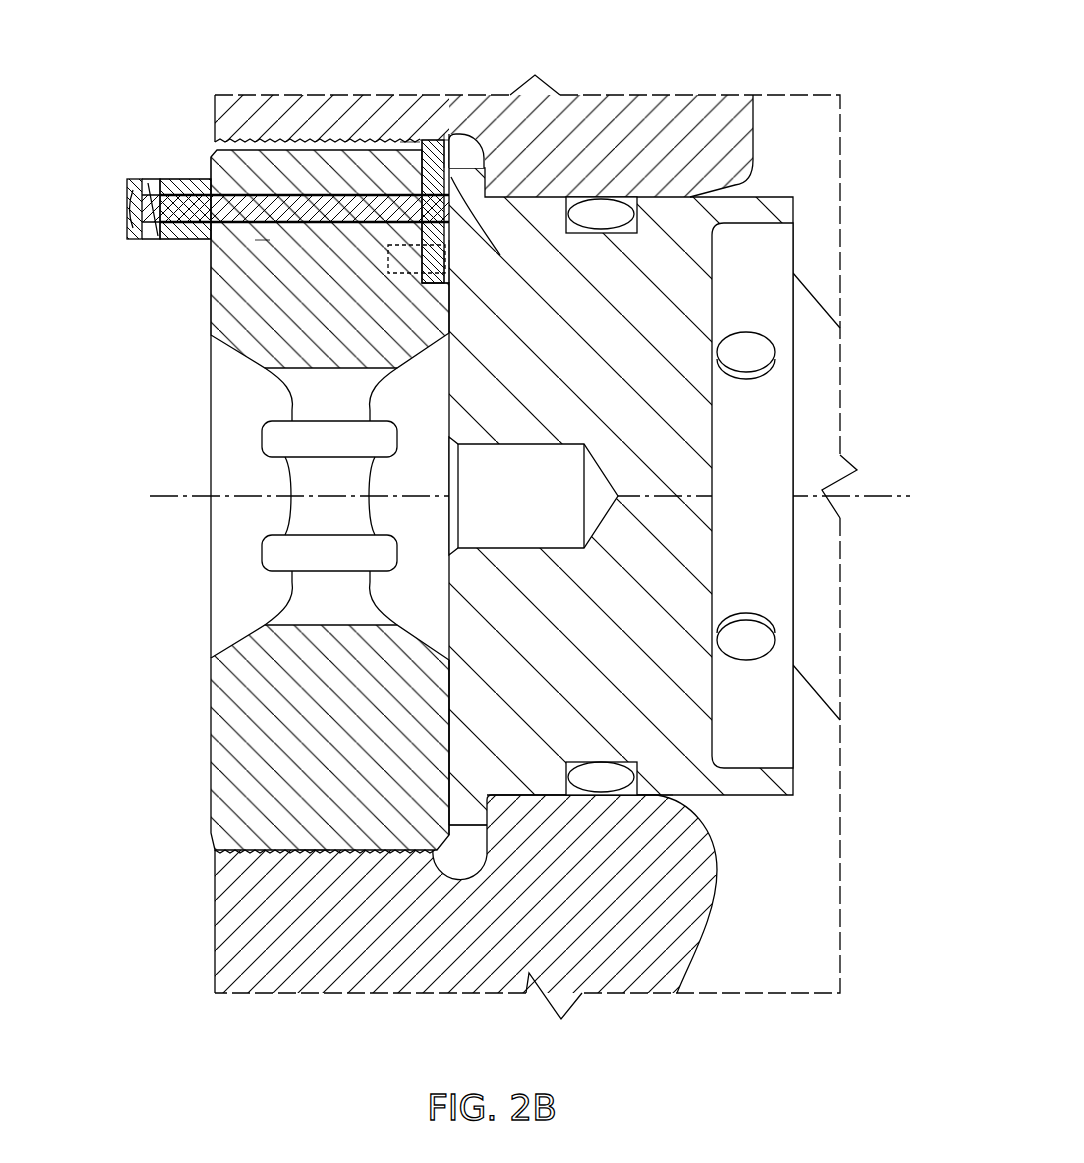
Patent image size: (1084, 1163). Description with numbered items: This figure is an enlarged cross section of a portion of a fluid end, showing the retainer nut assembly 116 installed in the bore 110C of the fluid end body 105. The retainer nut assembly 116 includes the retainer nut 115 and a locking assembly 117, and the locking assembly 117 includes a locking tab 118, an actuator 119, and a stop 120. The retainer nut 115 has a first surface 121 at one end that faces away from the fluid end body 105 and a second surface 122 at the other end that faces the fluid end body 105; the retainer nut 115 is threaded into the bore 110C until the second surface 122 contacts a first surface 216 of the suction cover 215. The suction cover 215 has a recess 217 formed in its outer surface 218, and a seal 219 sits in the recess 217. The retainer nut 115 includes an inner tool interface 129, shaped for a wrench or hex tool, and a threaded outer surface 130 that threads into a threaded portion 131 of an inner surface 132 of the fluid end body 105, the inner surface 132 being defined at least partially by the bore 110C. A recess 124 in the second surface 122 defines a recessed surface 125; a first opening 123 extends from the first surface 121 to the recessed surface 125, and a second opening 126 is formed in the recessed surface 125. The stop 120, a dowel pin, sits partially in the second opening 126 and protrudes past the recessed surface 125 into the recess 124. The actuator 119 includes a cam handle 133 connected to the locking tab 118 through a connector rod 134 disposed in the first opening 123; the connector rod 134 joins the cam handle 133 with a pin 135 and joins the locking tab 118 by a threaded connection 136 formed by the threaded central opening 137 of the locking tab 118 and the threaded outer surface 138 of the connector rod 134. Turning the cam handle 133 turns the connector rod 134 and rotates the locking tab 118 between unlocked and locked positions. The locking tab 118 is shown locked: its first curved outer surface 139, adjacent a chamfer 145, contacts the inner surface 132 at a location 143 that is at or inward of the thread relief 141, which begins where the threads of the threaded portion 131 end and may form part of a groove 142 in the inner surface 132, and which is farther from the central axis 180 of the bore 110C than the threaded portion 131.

The fluid end body 105 is at (248, 948).
The bore 110C is at (662, 800).
The retainer nut 115 is at (262, 780).
The retainer nut assembly 116 is at (132, 371).
The locking assembly 117 is at (153, 258).
The locking tab 118 is at (500, 255).
The actuator 119 is at (160, 176).
The stop 120 is at (430, 262).
The first surface 121 is at (211, 722).
The second surface 122 is at (444, 738).
The first opening 123 is at (257, 223).
The recess 124 is at (433, 278).
The recessed surface 125 is at (428, 148).
The second opening 126 is at (388, 245).
The inner tool interface 129 is at (242, 539).
The threaded outer surface 130 is at (324, 849).
The threaded portion 131 is at (343, 855).
The inner surface 132 is at (522, 190).
The cam handle 133 is at (185, 242).
The connector rod 134 is at (300, 207).
The pin 135 is at (147, 180).
The threaded connection 136 is at (440, 203).
The central opening 137 is at (425, 182).
The threaded outer surface 138 is at (262, 240).
The first curved outer surface 139 is at (450, 172).
The thread relief 141 is at (432, 135).
The groove 142 is at (467, 134).
The location 143 is at (445, 133).
The chamfer 145 is at (418, 140).
The central axis 180 is at (904, 490).
The suction cover 215 is at (663, 253).
The first surface 216 is at (450, 692).
The recess 217 is at (637, 797).
The outer surface 218 is at (655, 787).
The seal 219 is at (600, 777).